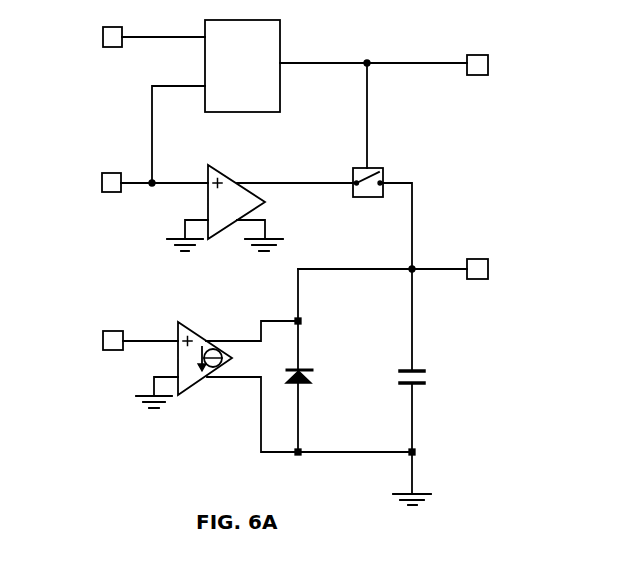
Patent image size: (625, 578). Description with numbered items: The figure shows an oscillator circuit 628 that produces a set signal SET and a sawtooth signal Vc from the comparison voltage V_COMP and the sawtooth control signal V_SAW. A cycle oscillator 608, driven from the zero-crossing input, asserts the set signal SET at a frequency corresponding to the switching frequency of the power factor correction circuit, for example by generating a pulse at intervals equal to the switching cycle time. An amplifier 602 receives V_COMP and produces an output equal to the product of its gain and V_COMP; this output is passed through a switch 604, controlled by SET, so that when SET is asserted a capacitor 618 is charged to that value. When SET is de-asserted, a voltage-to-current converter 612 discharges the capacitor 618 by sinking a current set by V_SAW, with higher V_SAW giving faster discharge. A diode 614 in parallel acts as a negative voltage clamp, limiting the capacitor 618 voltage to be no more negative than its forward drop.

The cycle oscillator 608 is at (280, 20).
The amplifier 602 is at (222, 168).
The switch 604 is at (366, 198).
The voltage-to-current (V2I) converter 612 is at (197, 324).
The diode 614 is at (305, 384).
The capacitor 618 is at (424, 385).
The oscillator circuit 628 is at (285, 252).